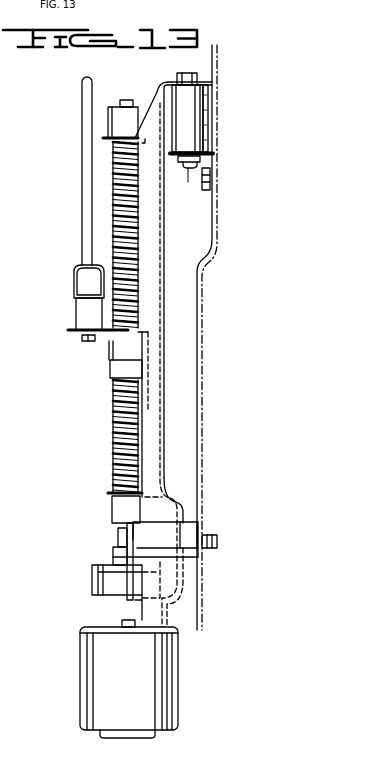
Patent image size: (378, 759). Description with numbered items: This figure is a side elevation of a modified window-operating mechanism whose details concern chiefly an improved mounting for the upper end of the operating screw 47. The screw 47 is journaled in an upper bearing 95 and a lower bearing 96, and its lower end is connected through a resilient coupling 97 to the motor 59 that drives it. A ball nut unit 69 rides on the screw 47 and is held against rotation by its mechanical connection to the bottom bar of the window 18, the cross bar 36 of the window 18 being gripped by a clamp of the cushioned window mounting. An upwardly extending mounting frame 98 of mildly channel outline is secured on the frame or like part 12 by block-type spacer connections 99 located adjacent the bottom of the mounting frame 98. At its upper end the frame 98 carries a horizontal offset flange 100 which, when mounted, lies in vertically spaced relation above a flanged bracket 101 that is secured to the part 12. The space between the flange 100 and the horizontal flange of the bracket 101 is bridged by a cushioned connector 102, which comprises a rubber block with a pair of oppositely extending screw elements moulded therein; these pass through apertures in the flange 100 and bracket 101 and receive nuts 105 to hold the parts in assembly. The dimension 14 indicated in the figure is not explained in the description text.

The frame or like part 12 is at (202, 353).
The dimension / clearance 14 is at (197, 63).
The window 18 is at (82, 144).
The cross bar 36 is at (77, 287).
The operating screw 47 is at (115, 418).
The motor 59 is at (160, 688).
The ball nut unit 69 is at (107, 352).
The upper bearing 95 is at (107, 112).
The lower bearing 96 is at (122, 513).
The resilient coupling 97 is at (103, 582).
The mounting frame 98 is at (165, 267).
The block-type spacer connections 99 is at (188, 533).
The horizontal offset flange 100 is at (208, 82).
The flanged bracket 101 is at (215, 152).
The cushioned connector 102 is at (206, 110).
The nuts 105 is at (211, 55).